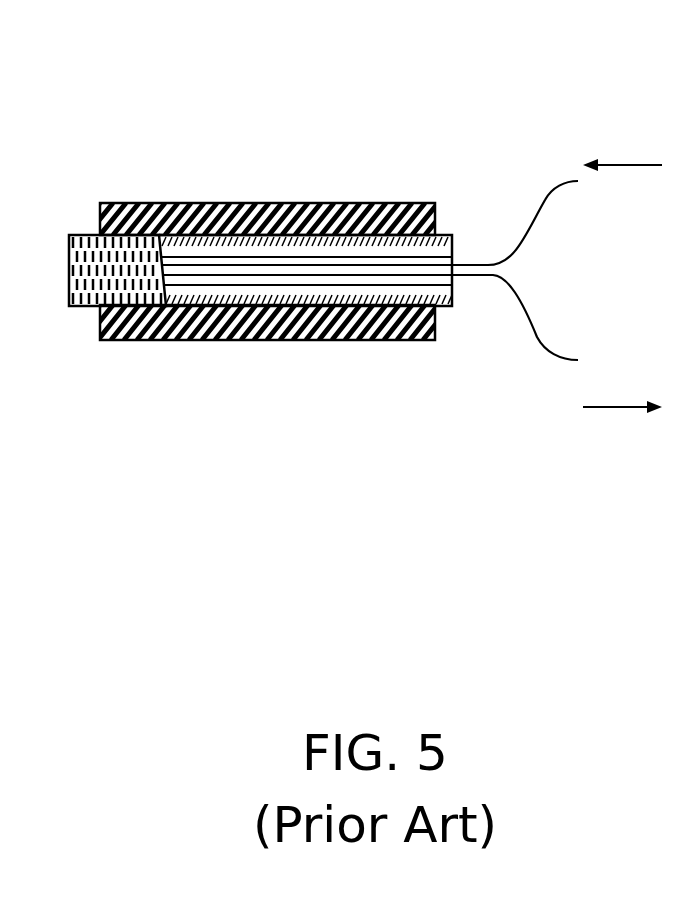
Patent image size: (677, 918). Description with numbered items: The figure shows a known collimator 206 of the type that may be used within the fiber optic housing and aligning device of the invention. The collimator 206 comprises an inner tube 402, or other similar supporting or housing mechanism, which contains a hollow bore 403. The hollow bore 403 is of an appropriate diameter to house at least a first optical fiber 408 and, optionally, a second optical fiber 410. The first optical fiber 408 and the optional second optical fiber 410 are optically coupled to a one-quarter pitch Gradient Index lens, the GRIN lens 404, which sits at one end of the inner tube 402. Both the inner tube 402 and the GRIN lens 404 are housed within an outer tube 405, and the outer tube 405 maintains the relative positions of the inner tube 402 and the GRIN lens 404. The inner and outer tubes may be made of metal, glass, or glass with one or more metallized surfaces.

The collimator 206 is at (113, 67).
The inner tube 402 is at (445, 233).
The hollow bore 403 is at (455, 283).
The GRIN lens 404 is at (78, 233).
The outer tube 405 is at (295, 202).
The first optical fiber 408 is at (558, 187).
The second optical fiber 410 is at (553, 352).